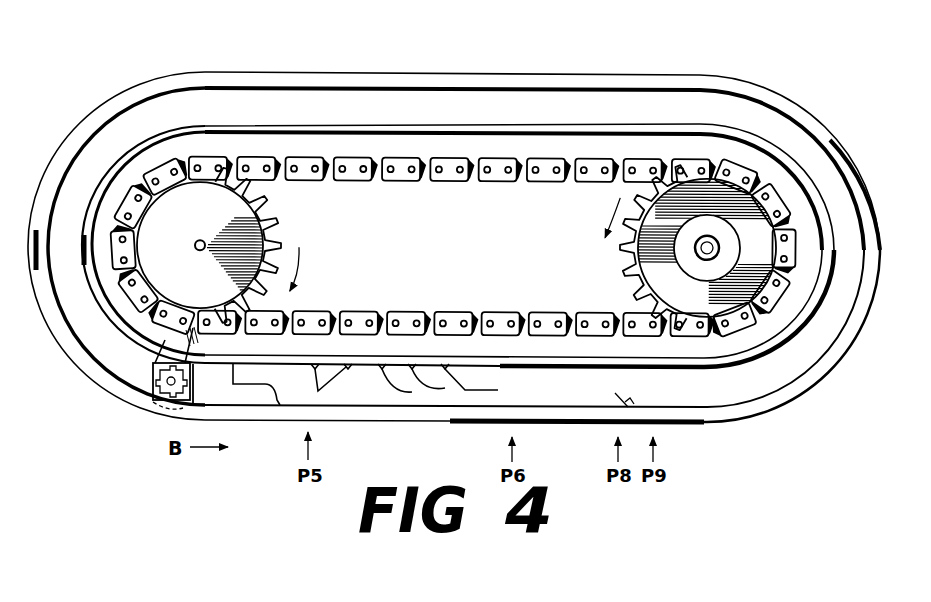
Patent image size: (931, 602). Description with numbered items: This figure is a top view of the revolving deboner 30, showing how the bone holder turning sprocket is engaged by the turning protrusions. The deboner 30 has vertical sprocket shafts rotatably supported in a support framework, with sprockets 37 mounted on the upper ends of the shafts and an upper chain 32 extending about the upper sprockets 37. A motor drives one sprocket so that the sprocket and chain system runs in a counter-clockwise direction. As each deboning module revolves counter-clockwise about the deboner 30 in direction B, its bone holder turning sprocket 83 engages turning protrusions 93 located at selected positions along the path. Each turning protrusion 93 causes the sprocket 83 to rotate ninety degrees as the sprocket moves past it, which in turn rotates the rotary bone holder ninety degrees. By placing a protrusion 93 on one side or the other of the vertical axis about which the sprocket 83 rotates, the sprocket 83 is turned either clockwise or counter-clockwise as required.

The deboner 30 is at (226, 52).
The upper chain 32 is at (393, 181).
The sprocket 37 is at (224, 218).
The bone holder turning sprocket 83 is at (150, 372).
The turning protrusion 93 is at (413, 385).